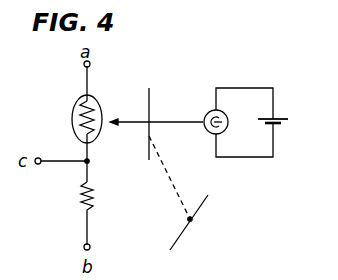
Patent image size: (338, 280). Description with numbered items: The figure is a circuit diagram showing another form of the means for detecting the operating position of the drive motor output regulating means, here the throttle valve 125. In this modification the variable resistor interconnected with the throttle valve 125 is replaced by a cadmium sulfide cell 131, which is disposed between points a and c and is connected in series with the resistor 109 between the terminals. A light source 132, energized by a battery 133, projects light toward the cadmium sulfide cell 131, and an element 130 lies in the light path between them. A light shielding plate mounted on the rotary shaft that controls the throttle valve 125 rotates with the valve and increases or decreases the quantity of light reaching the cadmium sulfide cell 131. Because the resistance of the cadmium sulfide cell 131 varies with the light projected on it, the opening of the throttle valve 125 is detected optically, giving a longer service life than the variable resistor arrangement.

The cadmium sulfide cell 131 is at (102, 107).
The lens 130 is at (153, 102).
The light source 132 is at (218, 110).
The battery 133 is at (284, 122).
The throttle valve 125 is at (186, 231).
The resistor 109 is at (94, 203).